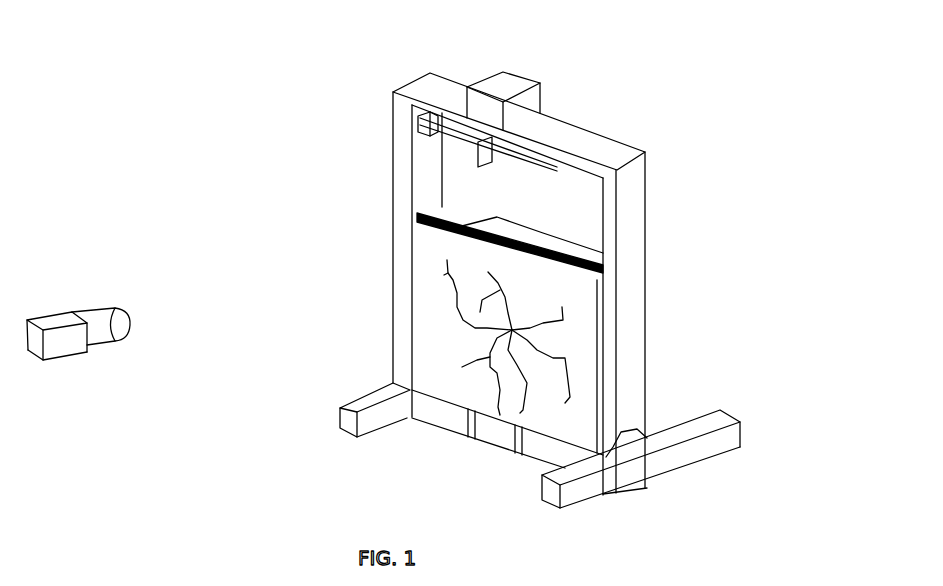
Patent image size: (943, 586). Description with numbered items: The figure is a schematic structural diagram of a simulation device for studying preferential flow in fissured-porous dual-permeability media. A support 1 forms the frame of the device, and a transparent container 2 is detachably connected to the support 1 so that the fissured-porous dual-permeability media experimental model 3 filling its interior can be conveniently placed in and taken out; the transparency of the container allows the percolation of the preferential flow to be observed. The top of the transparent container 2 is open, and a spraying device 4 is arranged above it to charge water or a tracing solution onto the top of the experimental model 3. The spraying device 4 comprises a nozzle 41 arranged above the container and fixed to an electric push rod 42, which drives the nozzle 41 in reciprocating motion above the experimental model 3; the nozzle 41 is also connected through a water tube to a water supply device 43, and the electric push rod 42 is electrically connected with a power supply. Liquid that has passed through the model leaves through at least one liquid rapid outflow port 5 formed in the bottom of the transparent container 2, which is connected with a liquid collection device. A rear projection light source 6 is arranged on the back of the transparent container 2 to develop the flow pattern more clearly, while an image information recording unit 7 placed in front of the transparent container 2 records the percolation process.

The support 1 is at (648, 250).
The transparent container 2 is at (428, 243).
The fissured-porous dual-permeability media experimental model 3 is at (417, 216).
The spraying device 4 is at (438, 159).
The nozzle 41 is at (441, 160).
The electric push rod 42 is at (470, 124).
The water supply device 43 is at (420, 120).
The liquid rapid outflow port 5 is at (467, 430).
The rear projection light source 6 is at (546, 240).
The image information recording unit 7 is at (60, 347).